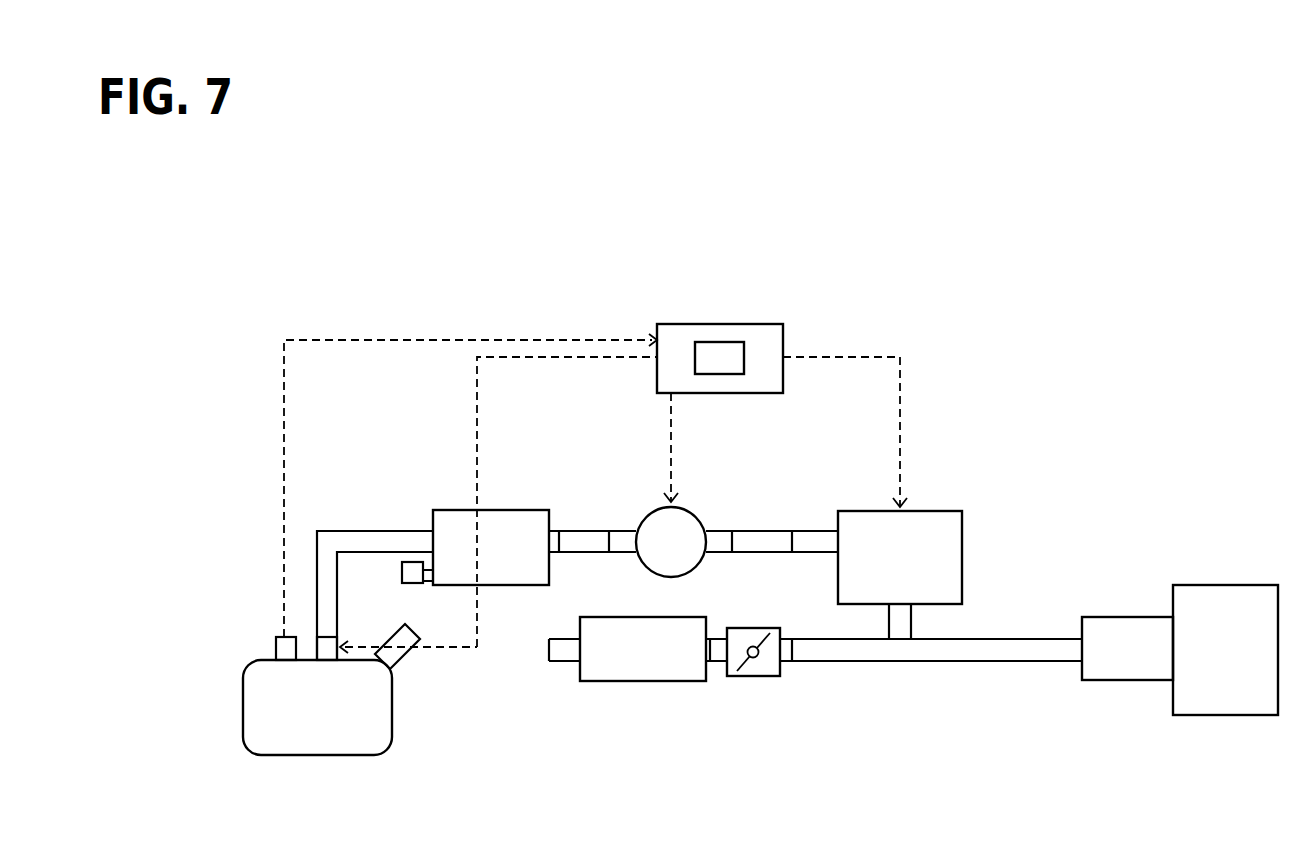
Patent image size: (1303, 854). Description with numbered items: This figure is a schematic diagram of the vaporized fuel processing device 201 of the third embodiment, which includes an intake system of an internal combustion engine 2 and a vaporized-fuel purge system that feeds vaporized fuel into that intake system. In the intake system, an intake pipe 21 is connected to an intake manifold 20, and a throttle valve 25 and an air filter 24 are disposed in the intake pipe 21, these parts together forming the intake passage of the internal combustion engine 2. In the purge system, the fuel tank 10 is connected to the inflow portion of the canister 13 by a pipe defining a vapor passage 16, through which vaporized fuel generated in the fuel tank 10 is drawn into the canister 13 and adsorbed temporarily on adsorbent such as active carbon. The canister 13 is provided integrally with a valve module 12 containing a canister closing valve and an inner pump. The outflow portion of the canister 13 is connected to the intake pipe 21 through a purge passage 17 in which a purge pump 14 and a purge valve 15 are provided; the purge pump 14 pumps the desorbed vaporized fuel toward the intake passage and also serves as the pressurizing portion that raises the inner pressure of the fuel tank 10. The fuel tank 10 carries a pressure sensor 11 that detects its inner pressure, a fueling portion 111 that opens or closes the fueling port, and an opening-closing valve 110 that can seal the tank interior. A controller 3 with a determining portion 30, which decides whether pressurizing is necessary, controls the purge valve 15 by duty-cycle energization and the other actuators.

The internal combustion engine 2 is at (1230, 715).
The controller 3 is at (675, 324).
The determining portion 30 is at (727, 342).
The fuel tank 10 is at (310, 755).
The pressure sensor 11 is at (276, 643).
The opening-closing valve 110 is at (313, 640).
The fueling portion 111 is at (405, 656).
The valve module 12 is at (404, 575).
The canister 13 is at (517, 510).
The purge pump 14 is at (696, 512).
The purge valve 15 is at (962, 525).
The vapor passage 16 is at (349, 529).
The purge passage 17 is at (583, 529).
The intake manifold 20 is at (1121, 680).
The intake pipe 21 is at (950, 661).
The air filter 24 is at (643, 681).
The throttle valve 25 is at (755, 676).
The vaporized fuel processing device 201 is at (940, 320).